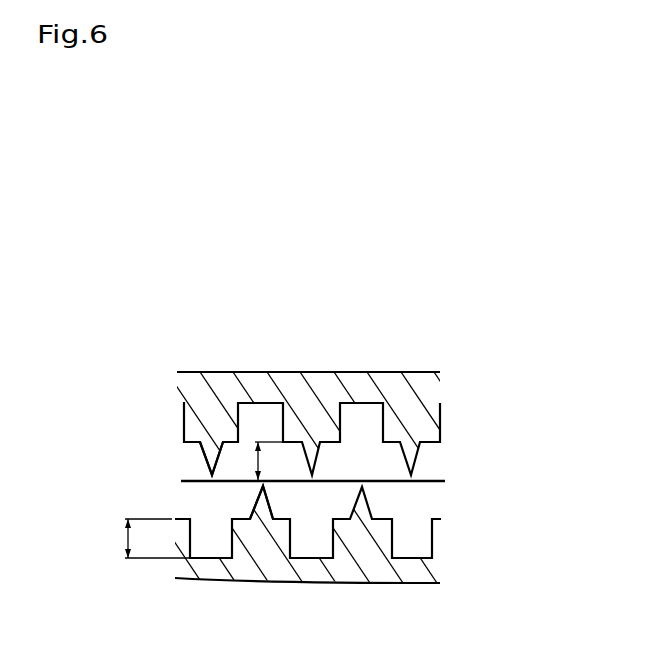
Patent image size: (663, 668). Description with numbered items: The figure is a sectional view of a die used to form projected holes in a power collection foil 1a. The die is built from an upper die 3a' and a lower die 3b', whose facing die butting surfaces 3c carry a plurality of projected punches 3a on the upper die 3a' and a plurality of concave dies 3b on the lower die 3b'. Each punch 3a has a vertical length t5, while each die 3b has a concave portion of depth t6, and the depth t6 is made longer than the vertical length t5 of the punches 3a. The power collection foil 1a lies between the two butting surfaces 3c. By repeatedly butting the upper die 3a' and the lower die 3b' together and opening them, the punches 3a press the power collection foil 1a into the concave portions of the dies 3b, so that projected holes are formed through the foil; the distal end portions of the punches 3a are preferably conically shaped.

The upper die 3a' is at (364, 415).
The punch 3a is at (361, 440).
The die butting surface 3c is at (199, 443).
The power collection foil 1a is at (428, 486).
The die 3b is at (364, 542).
The lower die 3b' is at (338, 561).
The vertical length of punch t5 is at (255, 457).
The depth of concave portion t6 is at (125, 540).